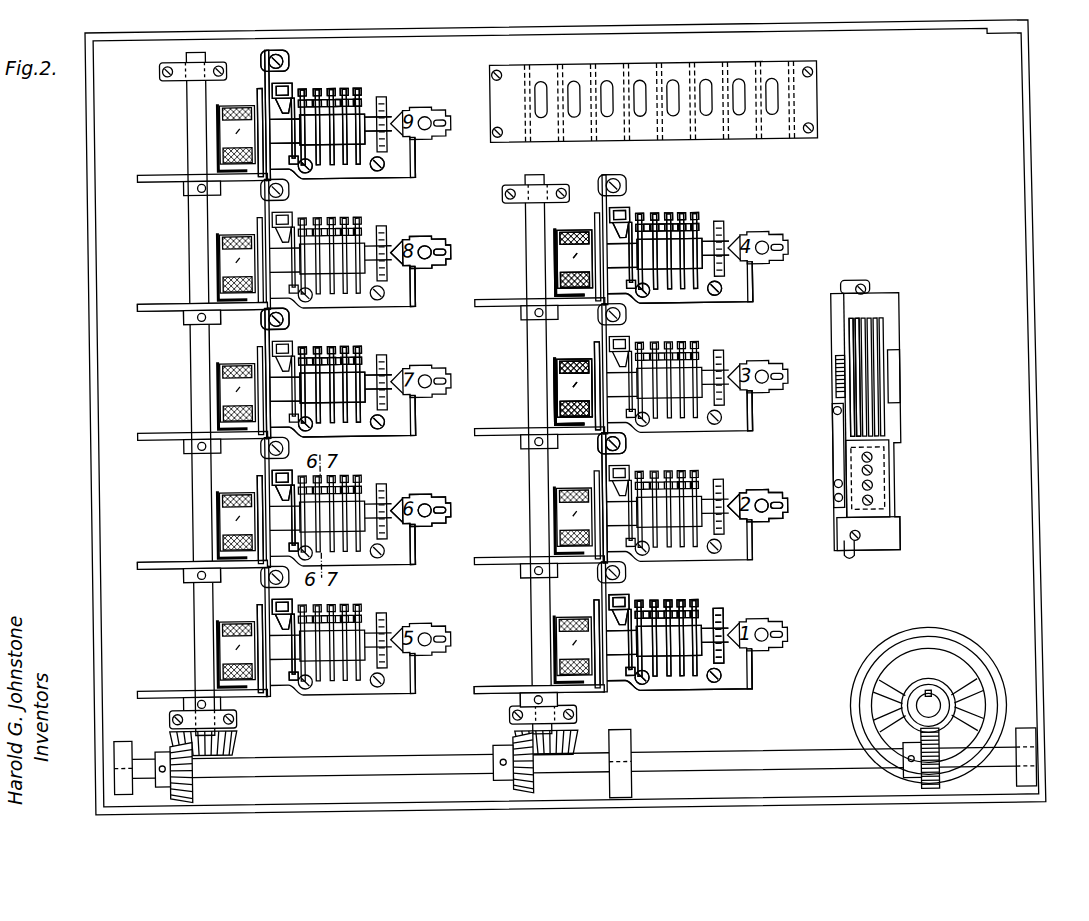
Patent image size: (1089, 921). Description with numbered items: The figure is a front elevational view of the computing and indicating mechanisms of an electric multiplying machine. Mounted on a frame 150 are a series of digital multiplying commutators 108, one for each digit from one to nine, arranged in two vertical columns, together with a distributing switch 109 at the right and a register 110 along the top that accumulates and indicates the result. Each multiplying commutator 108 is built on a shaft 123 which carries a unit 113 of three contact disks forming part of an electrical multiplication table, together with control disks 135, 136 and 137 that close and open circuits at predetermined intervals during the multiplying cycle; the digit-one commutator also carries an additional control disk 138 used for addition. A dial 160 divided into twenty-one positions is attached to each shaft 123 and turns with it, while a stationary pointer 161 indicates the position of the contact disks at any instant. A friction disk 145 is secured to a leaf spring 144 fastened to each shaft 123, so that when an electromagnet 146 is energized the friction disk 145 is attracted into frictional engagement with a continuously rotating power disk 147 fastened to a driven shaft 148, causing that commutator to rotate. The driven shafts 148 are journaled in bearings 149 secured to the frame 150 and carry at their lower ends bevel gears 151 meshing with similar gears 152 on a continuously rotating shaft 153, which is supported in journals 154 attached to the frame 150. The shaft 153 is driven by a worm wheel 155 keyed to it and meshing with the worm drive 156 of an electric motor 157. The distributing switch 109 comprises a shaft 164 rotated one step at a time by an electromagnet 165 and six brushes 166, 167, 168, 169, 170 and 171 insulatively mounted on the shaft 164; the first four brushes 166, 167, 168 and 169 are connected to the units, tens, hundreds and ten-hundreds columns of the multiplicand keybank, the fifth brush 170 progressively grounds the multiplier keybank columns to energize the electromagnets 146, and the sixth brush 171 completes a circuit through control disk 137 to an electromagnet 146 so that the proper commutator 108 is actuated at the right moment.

The multiplying commutator 108 is at (394, 101).
The distributing switch 109 is at (914, 344).
The register 110 is at (827, 81).
The unit of three contact disks 113 is at (331, 94).
The shaft 123 is at (607, 252).
The control disk 135 is at (288, 92).
The control disk 136 is at (346, 96).
The control disk 137 is at (359, 96).
The additional control disk 138 is at (722, 610).
The leaf spring 144 is at (263, 85).
The friction disk 145 is at (260, 150).
The electromagnet 146 is at (584, 360).
The power disk 147 is at (170, 158).
The driven shaft 148 is at (198, 505).
The bearing 149 is at (161, 76).
The frame 150 is at (88, 516).
The bevel gear 151 is at (177, 735).
The bevel gear 152 is at (186, 788).
The continuously rotating shaft 153 is at (353, 757).
The journal 154 is at (102, 762).
The worm wheel 155 is at (940, 787).
The worm drive 156 is at (936, 683).
The electric motor 157 is at (928, 633).
The dial 160 is at (412, 306).
The stationary pointer 161 is at (400, 242).
The shaft 164 is at (870, 385).
The electromagnet 165 is at (880, 483).
The brush 166 is at (850, 318).
The brush 167 is at (856, 318).
The brush 168 is at (862, 318).
The brush 169 is at (868, 318).
The brush 170 is at (874, 320).
The brush 171 is at (880, 321).